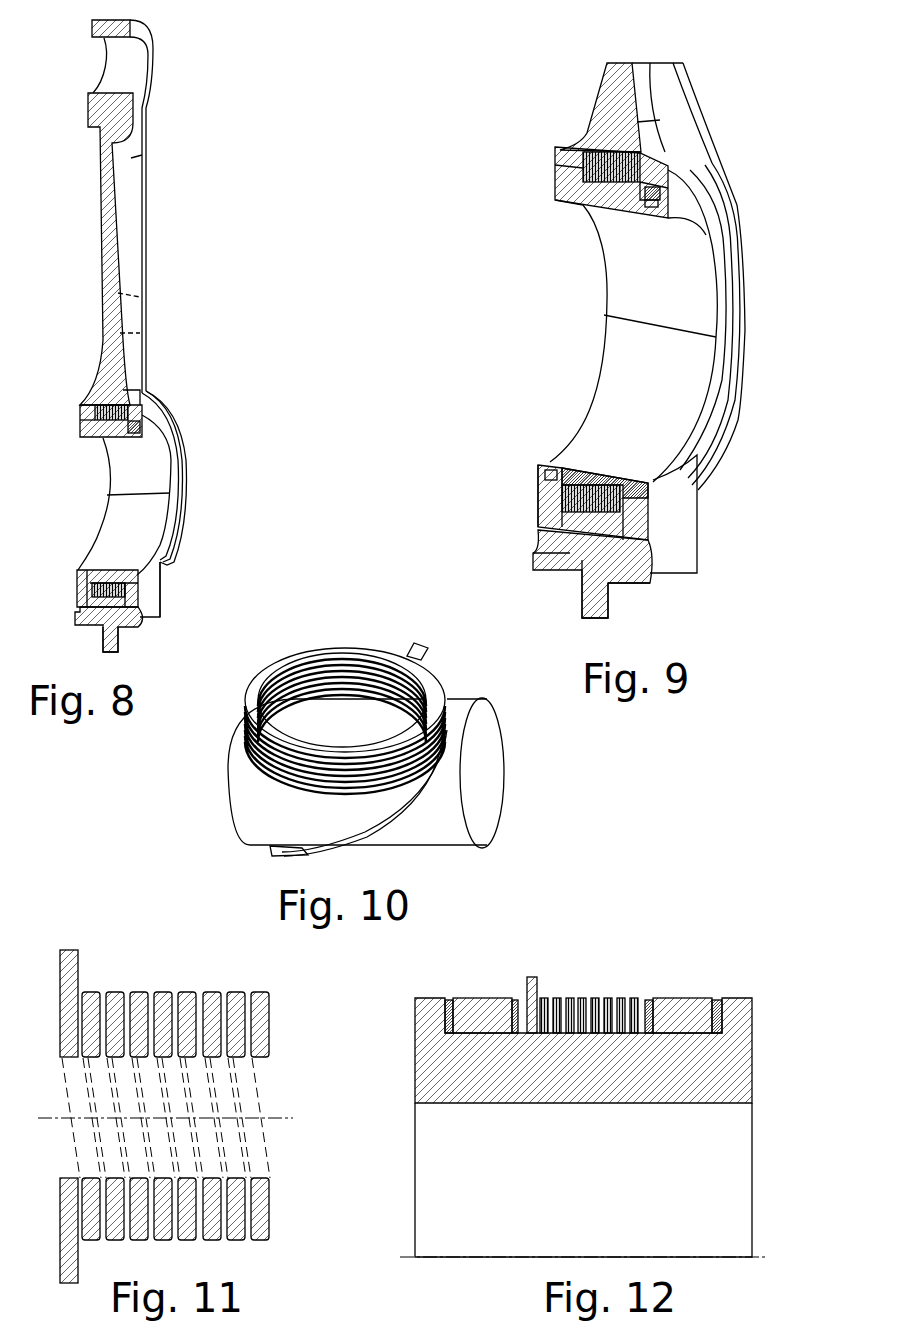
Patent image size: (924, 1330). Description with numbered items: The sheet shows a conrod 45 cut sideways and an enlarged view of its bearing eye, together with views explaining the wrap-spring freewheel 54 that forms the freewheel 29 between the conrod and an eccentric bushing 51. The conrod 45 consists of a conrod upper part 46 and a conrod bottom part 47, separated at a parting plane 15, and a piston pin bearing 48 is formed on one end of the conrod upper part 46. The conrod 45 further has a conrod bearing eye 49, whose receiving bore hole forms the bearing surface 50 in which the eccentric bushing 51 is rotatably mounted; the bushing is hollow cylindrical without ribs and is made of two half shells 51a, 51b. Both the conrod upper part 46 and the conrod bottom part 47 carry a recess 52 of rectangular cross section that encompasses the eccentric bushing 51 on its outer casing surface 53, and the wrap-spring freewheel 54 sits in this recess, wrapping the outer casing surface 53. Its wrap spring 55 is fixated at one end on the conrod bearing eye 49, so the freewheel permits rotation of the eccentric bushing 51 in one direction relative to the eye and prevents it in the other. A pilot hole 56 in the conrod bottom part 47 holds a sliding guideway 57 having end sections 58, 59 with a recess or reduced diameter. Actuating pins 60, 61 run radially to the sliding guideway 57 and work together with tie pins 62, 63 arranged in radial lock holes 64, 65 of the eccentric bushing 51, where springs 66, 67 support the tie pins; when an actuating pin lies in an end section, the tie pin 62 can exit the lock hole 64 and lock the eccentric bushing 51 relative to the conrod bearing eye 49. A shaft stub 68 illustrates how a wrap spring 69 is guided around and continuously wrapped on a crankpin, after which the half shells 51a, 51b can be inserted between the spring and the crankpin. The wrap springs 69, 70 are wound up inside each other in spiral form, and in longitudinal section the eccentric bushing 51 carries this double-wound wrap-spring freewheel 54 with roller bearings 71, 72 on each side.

In FIG. 8, the parting plane 15 is at (173, 532).
In FIG. 9, the parting plane 15 is at (735, 330).
In FIG. 8, the freewheel 29 is at (85, 410).
In FIG. 9, the freewheel 29 is at (557, 168).
In FIG. 12, the freewheel 29 is at (624, 998).
In FIG. 8, the conrod 45 is at (147, 274).
In FIG. 9, the conrod 45 is at (698, 103).
In FIG. 8, the conrod upper part 46 is at (125, 173).
In FIG. 9, the conrod upper part 46 is at (667, 87).
In FIG. 8, the conrod bottom part 47 is at (152, 592).
In FIG. 9, the conrod bottom part 47 is at (673, 494).
In FIG. 8, the piston pin bearing 48 is at (127, 63).
In FIG. 8, the conrod bearing eye 49 is at (175, 463).
In FIG. 9, the conrod bearing eye 49 is at (727, 222).
In FIG. 8, the outer surface 50 is at (153, 417).
In FIG. 9, the outer surface 50 is at (740, 297).
In FIG. 8, the eccentric bushing 51 is at (163, 438).
In FIG. 9, the eccentric bushing 51 is at (633, 326).
In FIG. 12, the eccentric bushing 51 is at (713, 1068).
In FIG. 8, the half shell 51a is at (133, 475).
In FIG. 9, the half shell 51a is at (690, 265).
In FIG. 8, the half shell 51b is at (118, 541).
In FIG. 9, the half shell 51b is at (673, 408).
In FIG. 8, the recess 52 is at (132, 405).
In FIG. 9, the recess 52 is at (640, 153).
In FIG. 8, the outer casing surface 53 is at (180, 488).
In FIG. 9, the outer casing surface 53 is at (722, 373).
In FIG. 8, the wrap-spring freewheel 54 is at (92, 428).
In FIG. 9, the wrap-spring freewheel 54 is at (597, 150).
In FIG. 11, the wrap-spring freewheel 54 is at (190, 992).
In FIG. 12, the wrap-spring freewheel 54 is at (580, 1010).
In FIG. 9, the wrap spring 55 is at (583, 207).
In FIG. 9, the pilot hole 56 is at (543, 560).
In FIG. 8, the sliding guideway 57 is at (138, 616).
In FIG. 9, the sliding guideway 57 is at (578, 562).
In FIG. 9, the end section 58 is at (540, 541).
In FIG. 9, the end section 59 is at (645, 560).
In FIG. 9, the actuating pin 60 is at (550, 518).
In FIG. 9, the actuating pin 61 is at (633, 518).
In FIG. 9, the tie pin 62 is at (548, 470).
In FIG. 9, the tie pin 63 is at (673, 193).
In FIG. 9, the lock hole 64 is at (568, 470).
In FIG. 9, the lock hole 65 is at (650, 207).
In FIG. 9, the spring 66 is at (553, 465).
In FIG. 9, the spring 67 is at (650, 212).
In FIG. 8, the shaft stub 68 is at (118, 645).
In FIG. 9, the shaft stub 68 is at (597, 593).
In FIG. 10, the shaft stub 68 is at (443, 802).
In FIG. 10, the wrap spring 69 is at (355, 652).
In FIG. 11, the wrap spring 69 is at (125, 1010).
In FIG. 12, the wrap spring 69 is at (558, 1035).
In FIG. 11, the wrap spring 70 is at (145, 1008).
In FIG. 12, the wrap spring 70 is at (570, 1030).
In FIG. 12, the roller bearing 71 is at (487, 1020).
In FIG. 12, the roller bearing 72 is at (693, 1018).